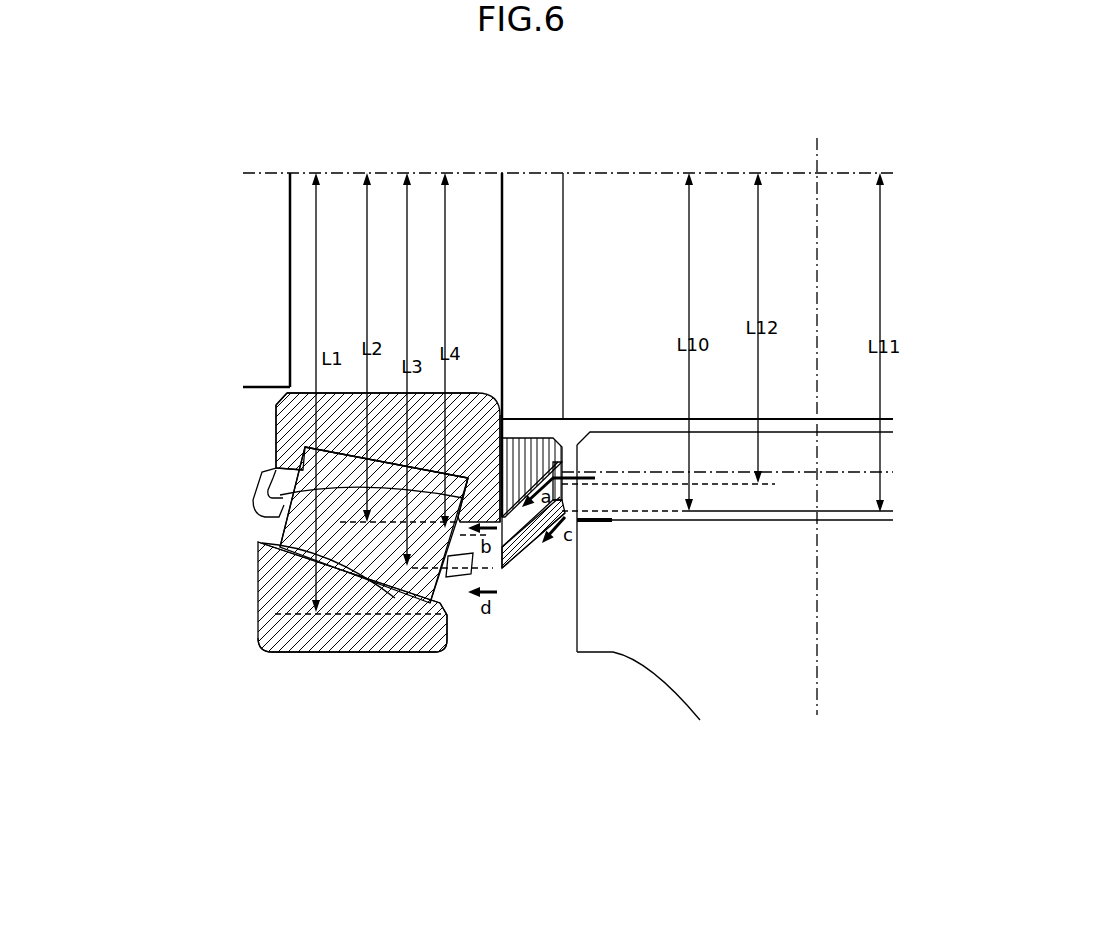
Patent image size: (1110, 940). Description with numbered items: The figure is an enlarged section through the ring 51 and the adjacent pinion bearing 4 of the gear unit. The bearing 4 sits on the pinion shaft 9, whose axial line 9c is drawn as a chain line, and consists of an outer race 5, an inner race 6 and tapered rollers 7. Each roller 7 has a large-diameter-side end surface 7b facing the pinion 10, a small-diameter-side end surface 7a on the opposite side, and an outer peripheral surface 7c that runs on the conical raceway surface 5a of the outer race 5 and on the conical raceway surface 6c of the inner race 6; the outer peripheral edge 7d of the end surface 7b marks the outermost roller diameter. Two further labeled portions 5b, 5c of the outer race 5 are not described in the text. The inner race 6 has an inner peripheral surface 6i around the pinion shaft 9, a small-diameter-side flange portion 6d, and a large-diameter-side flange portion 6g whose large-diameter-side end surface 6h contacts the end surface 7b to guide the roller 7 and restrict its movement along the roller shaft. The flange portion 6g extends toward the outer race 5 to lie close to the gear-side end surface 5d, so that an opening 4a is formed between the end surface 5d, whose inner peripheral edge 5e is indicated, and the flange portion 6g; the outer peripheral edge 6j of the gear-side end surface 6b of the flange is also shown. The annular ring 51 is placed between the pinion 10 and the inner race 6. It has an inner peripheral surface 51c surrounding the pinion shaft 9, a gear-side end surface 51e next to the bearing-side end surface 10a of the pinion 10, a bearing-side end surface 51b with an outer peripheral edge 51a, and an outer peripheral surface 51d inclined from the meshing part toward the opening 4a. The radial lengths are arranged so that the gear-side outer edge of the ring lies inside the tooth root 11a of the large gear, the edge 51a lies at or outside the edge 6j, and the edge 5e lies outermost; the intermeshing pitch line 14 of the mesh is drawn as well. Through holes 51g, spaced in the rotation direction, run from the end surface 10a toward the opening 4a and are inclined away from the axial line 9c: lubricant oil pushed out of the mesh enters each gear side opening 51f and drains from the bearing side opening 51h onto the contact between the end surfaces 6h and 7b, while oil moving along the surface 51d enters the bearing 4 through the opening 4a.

The bearing 4 is at (255, 543).
The opening 4a is at (457, 598).
The outer race 5 is at (262, 640).
The conical raceway surface 5a is at (270, 607).
The roller lower surface 5b is at (300, 655).
The roller lower left corner 5c is at (420, 655).
The gear-side end surface 5d is at (436, 652).
The inner peripheral edge 5e is at (446, 600).
The inner race 6 is at (349, 392).
The gear-side end surface 6b is at (465, 420).
The conical raceway surface 6c is at (276, 425).
The small-diameter-side flange portion 6d is at (276, 443).
The large-diameter-side flange portion 6g is at (303, 472).
The large-diameter-side end surface 6h is at (300, 493).
The inner peripheral surface 6i is at (305, 392).
The outer peripheral edge 6j is at (517, 512).
The roller 7 is at (283, 542).
The small-diameter-side end surface 7a is at (303, 458).
The large-diameter-side end surface 7b is at (447, 590).
The outer peripheral surface 7c is at (268, 586).
The outer peripheral edge 7d is at (468, 476).
The pinion shaft 9 is at (263, 192).
The axial line 9c is at (327, 173).
The pinion 10 is at (657, 230).
The bearing-side end surface 10a is at (582, 420).
The tooth root 11a is at (868, 522).
The intermeshing pitch line 14 is at (847, 472).
The ring 51 is at (512, 460).
The outer peripheral edge 51a is at (505, 572).
The bearing-side end surface 51b is at (507, 445).
The inner peripheral surface 51c is at (527, 440).
The outer peripheral surface 51d is at (577, 545).
The gear-side end surface 51e is at (588, 522).
The gear side opening 51f is at (592, 482).
The through hole 51g is at (528, 547).
The bearing side opening 51h is at (502, 568).